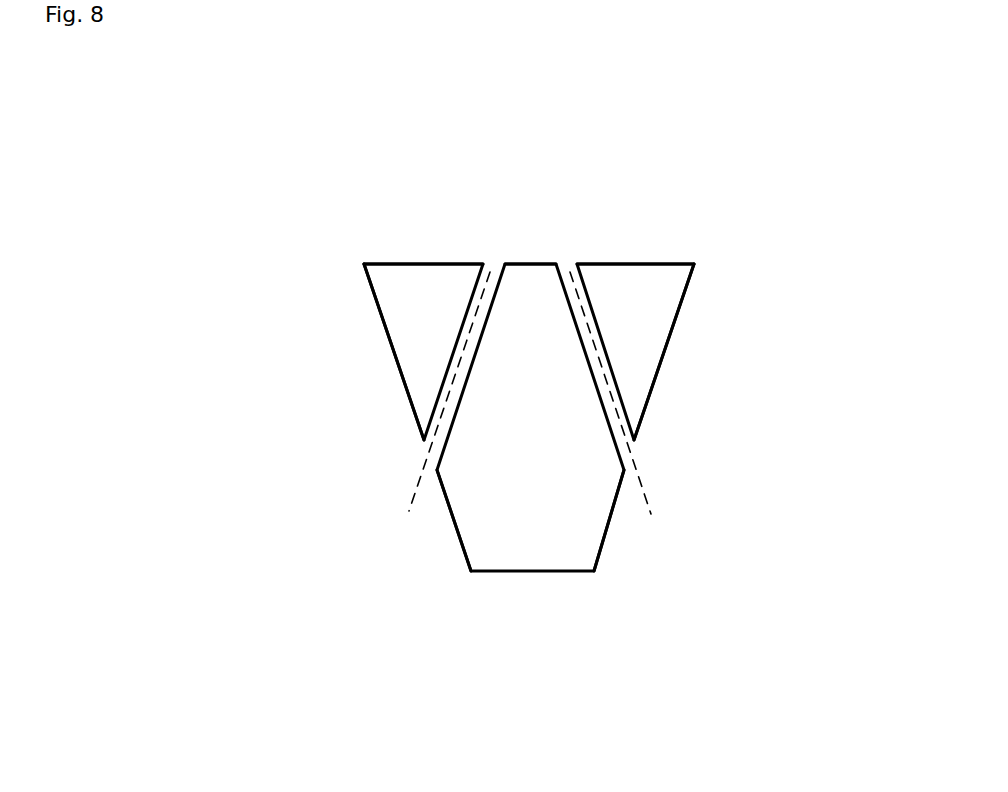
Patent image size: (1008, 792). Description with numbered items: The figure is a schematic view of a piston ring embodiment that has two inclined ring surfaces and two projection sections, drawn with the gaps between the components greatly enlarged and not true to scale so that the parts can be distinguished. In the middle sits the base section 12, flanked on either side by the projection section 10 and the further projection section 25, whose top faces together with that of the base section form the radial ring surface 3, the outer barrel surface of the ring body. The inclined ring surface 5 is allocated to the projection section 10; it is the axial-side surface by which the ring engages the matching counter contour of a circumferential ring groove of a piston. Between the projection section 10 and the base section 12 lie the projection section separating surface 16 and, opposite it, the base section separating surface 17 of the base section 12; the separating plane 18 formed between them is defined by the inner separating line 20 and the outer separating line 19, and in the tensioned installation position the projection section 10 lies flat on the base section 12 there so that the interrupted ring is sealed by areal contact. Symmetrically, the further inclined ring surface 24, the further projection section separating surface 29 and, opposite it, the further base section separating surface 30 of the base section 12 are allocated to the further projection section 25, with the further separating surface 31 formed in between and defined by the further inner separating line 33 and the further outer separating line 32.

The radial ring surface 3 is at (387, 260).
The inclined ring surface 5 is at (382, 323).
The projection section 10 is at (411, 316).
The base section 12 is at (519, 487).
The projection section separating surface 16 is at (487, 276).
The base section separating surface 17 is at (448, 404).
The separating plane 18 is at (409, 508).
The outer separating line 19 is at (481, 245).
The inner separating line 20 is at (416, 461).
The further inclined ring surface 24 is at (657, 378).
The further projection section 25 is at (619, 321).
The further projection section separating surface 29 is at (568, 272).
The further base section separating surface 30 is at (598, 392).
The further separating surface 31 is at (656, 528).
The further outer separating line 32 is at (576, 245).
The further inner separating line 33 is at (664, 463).